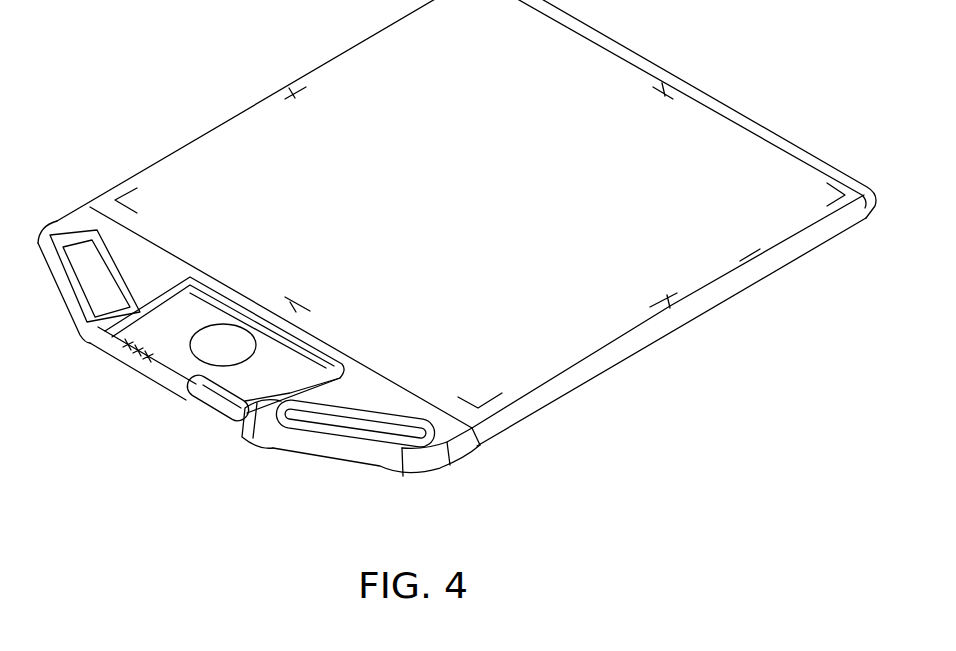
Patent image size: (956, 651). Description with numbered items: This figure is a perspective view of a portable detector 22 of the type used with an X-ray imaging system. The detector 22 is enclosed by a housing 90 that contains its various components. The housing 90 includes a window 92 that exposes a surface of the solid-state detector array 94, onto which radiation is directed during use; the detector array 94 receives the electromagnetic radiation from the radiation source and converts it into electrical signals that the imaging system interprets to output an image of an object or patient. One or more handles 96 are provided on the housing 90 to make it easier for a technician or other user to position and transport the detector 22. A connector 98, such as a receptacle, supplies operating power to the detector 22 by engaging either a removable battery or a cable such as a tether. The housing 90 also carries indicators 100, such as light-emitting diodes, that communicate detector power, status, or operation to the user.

The portable detector 22 is at (157, 87).
The housing 90 is at (130, 257).
The window 92 is at (445, 395).
The solid-state detector array 94 is at (718, 259).
The handles 96 is at (63, 290).
The connector 98 is at (222, 403).
The indicators 100 is at (126, 352).